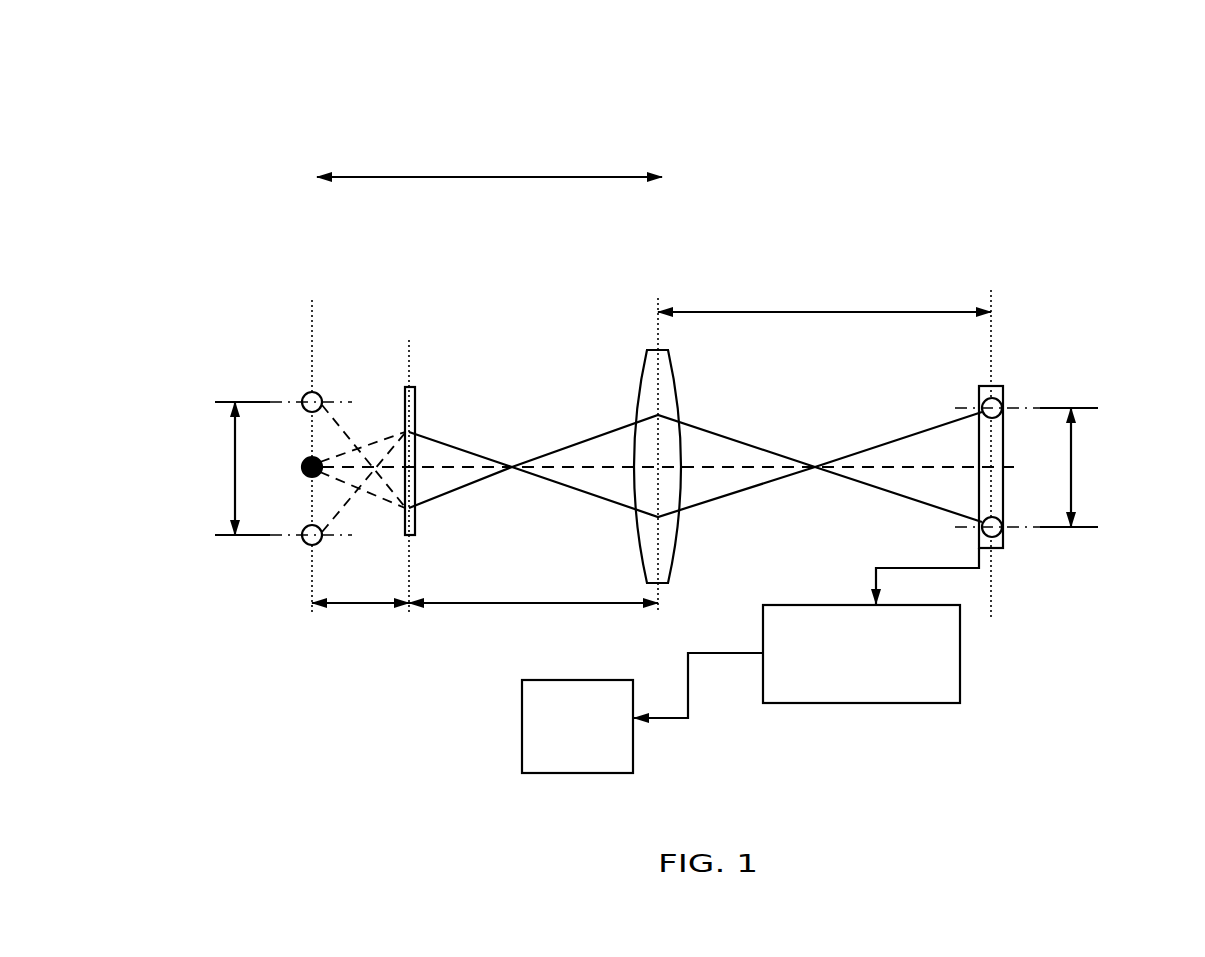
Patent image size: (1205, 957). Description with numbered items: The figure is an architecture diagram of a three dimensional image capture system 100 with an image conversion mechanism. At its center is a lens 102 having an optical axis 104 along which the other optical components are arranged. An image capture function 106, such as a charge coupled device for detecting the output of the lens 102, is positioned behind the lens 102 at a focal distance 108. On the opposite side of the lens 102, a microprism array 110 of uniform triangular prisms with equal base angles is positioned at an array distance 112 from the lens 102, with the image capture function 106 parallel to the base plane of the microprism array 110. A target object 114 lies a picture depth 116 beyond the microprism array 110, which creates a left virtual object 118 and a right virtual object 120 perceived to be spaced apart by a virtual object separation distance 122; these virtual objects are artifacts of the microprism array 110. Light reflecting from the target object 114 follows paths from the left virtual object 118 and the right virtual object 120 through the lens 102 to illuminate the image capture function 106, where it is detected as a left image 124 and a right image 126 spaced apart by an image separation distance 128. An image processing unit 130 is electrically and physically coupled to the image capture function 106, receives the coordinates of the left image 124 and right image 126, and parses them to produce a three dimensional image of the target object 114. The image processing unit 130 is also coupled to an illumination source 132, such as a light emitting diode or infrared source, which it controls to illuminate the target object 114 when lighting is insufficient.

The three dimensional image capture system 100 is at (297, 130).
The lens 102 is at (663, 407).
The optical axis 104 is at (913, 467).
The image capture function 106 is at (997, 388).
The focal distance 108 is at (762, 312).
The microprism array 110 is at (411, 398).
The array distance 112 is at (465, 603).
The target object 114 is at (318, 458).
The picture depth 116 is at (372, 603).
The left virtual object 118 is at (312, 545).
The right virtual object 120 is at (312, 392).
The virtual object separation distance 122 is at (230, 485).
The left image 124 is at (997, 530).
The right image 126 is at (987, 405).
The image separation distance 128 is at (1073, 475).
The image processing unit 130 is at (871, 625).
The illumination source 132 is at (642, 713).